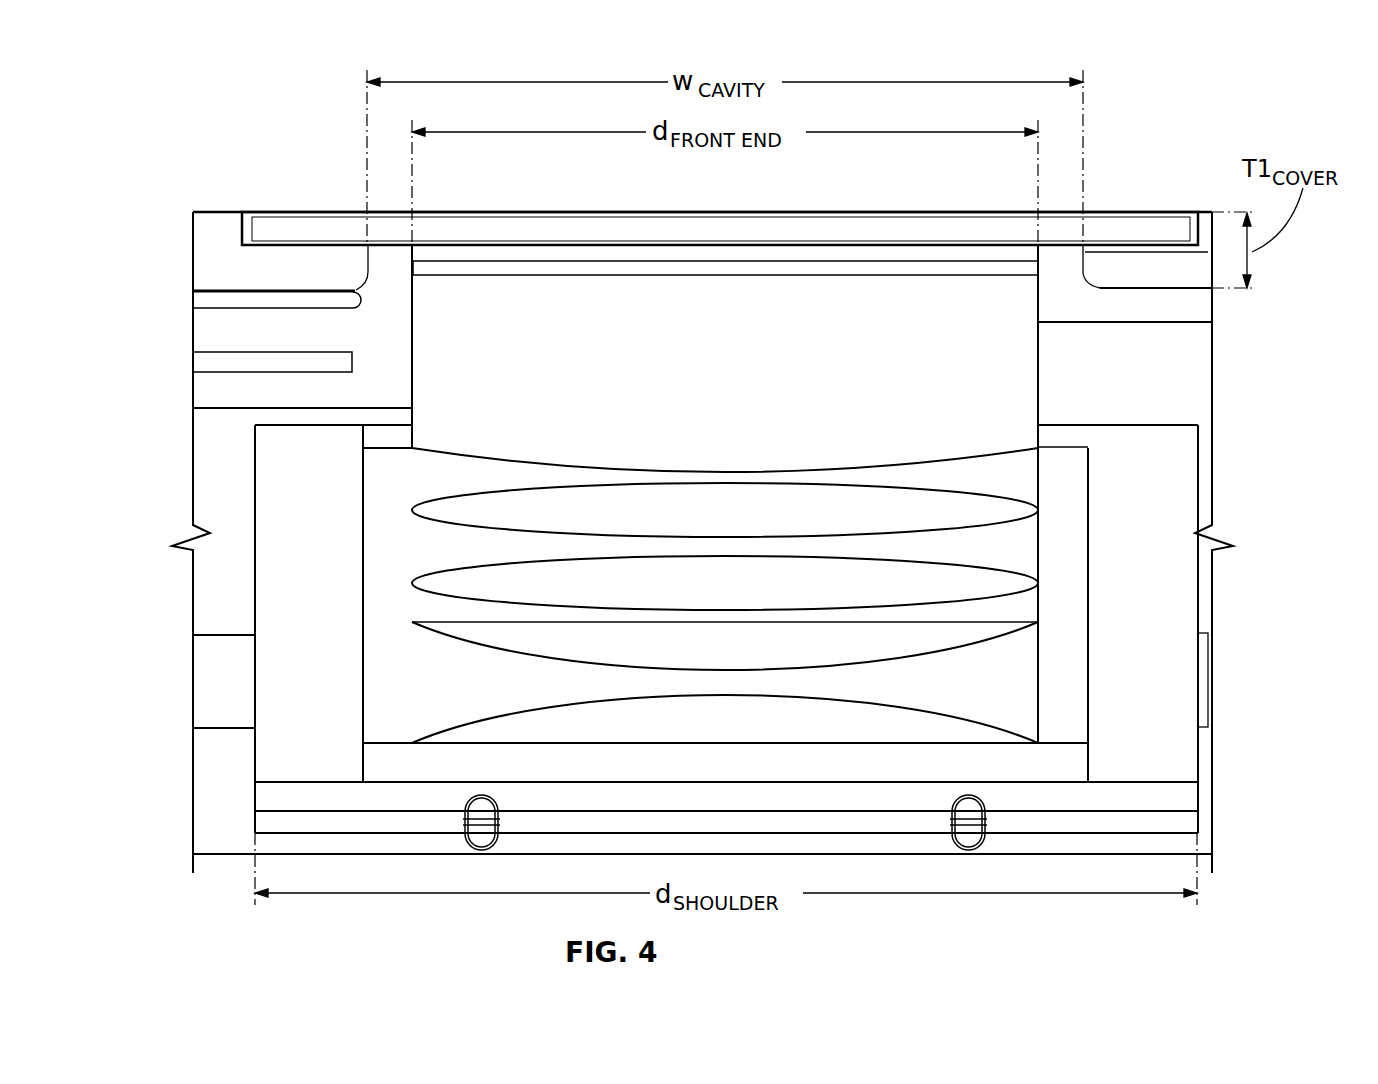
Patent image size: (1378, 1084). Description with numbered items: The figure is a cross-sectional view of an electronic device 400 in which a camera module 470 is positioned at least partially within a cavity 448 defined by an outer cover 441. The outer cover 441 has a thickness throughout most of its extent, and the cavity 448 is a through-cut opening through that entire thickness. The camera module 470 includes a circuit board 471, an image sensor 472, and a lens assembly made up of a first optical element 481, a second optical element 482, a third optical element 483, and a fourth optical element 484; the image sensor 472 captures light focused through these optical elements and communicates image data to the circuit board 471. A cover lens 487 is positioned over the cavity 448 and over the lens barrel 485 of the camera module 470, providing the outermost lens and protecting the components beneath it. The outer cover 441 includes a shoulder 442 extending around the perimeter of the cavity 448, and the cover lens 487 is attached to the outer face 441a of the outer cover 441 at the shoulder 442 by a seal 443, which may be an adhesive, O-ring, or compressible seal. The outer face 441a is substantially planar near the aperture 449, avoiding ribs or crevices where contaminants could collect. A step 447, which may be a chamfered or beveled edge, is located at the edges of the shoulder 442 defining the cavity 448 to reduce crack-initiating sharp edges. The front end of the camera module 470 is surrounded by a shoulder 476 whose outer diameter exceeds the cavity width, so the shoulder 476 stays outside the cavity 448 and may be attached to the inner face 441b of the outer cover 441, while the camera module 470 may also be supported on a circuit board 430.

The electronic device 400 is at (1250, 70).
The circuit board 430 is at (223, 635).
The outer cover 441 is at (203, 204).
The outer face 441a is at (230, 211).
The inner face 441b is at (233, 293).
The shoulder 442 is at (235, 272).
The seal 443 is at (1150, 243).
The step 447 is at (366, 290).
The cavity 448 is at (1072, 275).
The aperture 449 is at (945, 211).
The camera module 470 is at (1224, 484).
The circuit board 471 is at (255, 820).
The image sensor 472 is at (562, 833).
The shoulder 476 is at (1160, 425).
The first optical element 481 is at (255, 792).
The second optical element 482 is at (412, 682).
The third optical element 483 is at (412, 583).
The fourth optical element 484 is at (412, 509).
The lens barrel 485 is at (412, 372).
The cover lens 487 is at (828, 211).